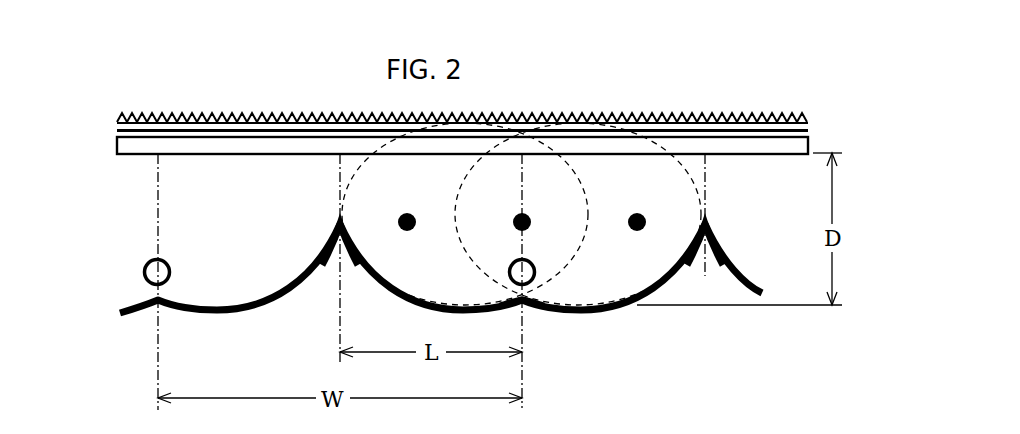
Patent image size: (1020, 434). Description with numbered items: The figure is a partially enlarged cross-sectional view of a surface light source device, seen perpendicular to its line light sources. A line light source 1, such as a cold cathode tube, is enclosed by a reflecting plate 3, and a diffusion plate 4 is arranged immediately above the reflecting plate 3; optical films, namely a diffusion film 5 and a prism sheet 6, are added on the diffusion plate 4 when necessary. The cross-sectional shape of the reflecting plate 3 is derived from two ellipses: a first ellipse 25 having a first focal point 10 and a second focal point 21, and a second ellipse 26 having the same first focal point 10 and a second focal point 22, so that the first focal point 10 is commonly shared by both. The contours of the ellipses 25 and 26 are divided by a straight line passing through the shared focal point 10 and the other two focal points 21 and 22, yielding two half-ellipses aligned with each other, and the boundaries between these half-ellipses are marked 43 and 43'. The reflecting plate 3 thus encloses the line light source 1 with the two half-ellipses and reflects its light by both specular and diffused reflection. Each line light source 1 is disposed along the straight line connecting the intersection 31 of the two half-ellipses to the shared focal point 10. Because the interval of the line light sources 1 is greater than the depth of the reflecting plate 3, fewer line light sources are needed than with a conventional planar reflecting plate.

The line light source 1 is at (171, 271).
The reflecting plate 3 is at (602, 313).
The diffusion plate 4 is at (117, 146).
The diffusion film 5 is at (117, 129).
The prism sheet 6 is at (118, 117).
The first focal point 10 is at (519, 216).
The second focal point 21 is at (642, 216).
The second focal point 22 is at (406, 216).
The first ellipse 25 is at (702, 193).
The second ellipse 26 is at (343, 200).
The intersection 31 is at (524, 304).
The boundary 43 is at (736, 231).
The boundary 43' is at (308, 231).